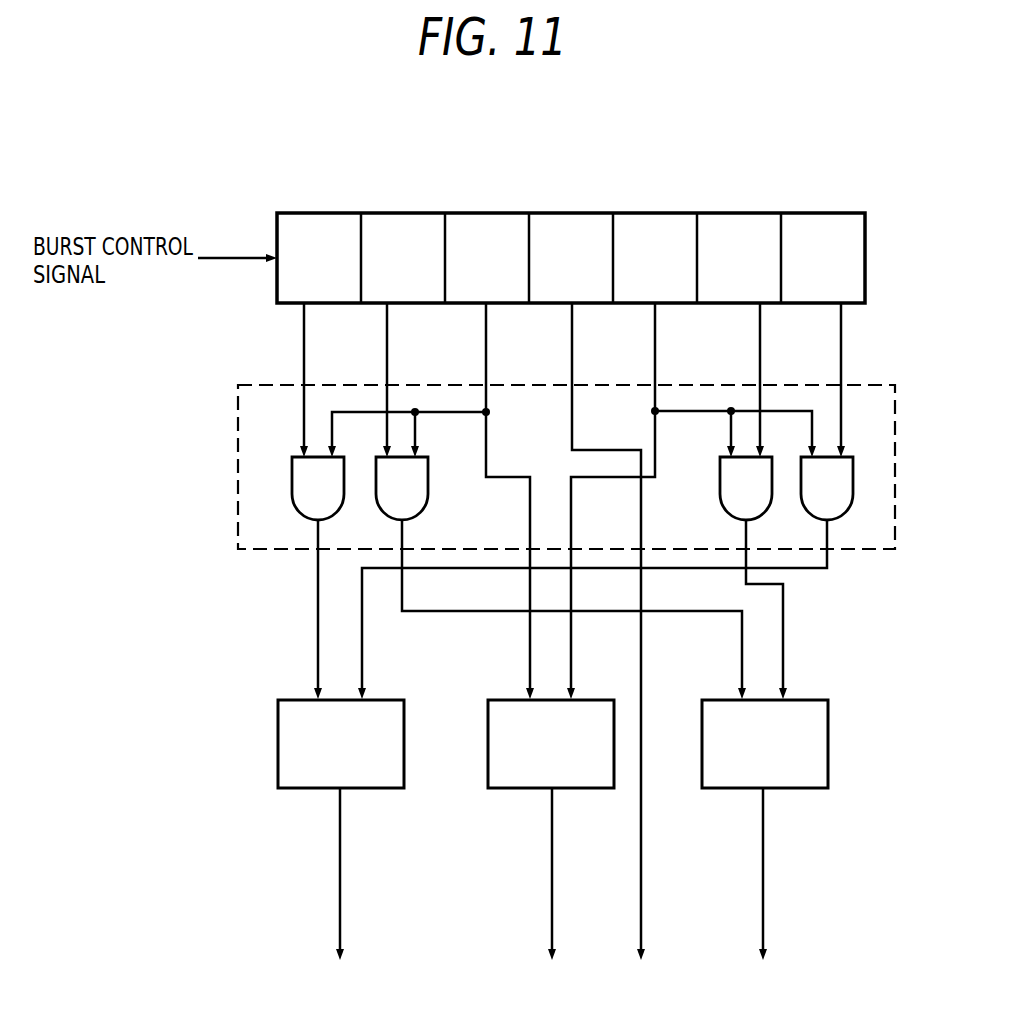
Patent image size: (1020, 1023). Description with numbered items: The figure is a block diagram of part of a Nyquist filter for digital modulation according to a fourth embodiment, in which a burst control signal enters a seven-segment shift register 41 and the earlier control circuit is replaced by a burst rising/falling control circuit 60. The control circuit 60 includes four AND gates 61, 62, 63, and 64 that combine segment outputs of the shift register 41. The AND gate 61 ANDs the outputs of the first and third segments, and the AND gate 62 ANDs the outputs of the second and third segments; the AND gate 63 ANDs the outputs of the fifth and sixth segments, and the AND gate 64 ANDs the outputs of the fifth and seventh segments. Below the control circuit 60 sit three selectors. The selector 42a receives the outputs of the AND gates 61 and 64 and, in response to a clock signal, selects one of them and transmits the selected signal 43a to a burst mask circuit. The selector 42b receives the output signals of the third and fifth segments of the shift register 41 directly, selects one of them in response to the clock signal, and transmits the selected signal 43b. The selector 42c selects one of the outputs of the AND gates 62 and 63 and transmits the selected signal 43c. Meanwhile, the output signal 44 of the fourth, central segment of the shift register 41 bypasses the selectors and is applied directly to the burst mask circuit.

The shift register 41 is at (748, 210).
The burst rising/falling control circuit 60 is at (868, 372).
The AND gate 61 is at (298, 519).
The AND gate 62 is at (385, 519).
The AND gate 63 is at (721, 519).
The AND gate 64 is at (811, 519).
The selector 42a is at (388, 695).
The selector 42b is at (583, 695).
The selector 42c is at (806, 695).
The selected signal 43a is at (341, 895).
The selected signal 43b is at (555, 895).
The selected signal 43c is at (767, 895).
The output signal of the fourth (central) segment 44 is at (613, 653).